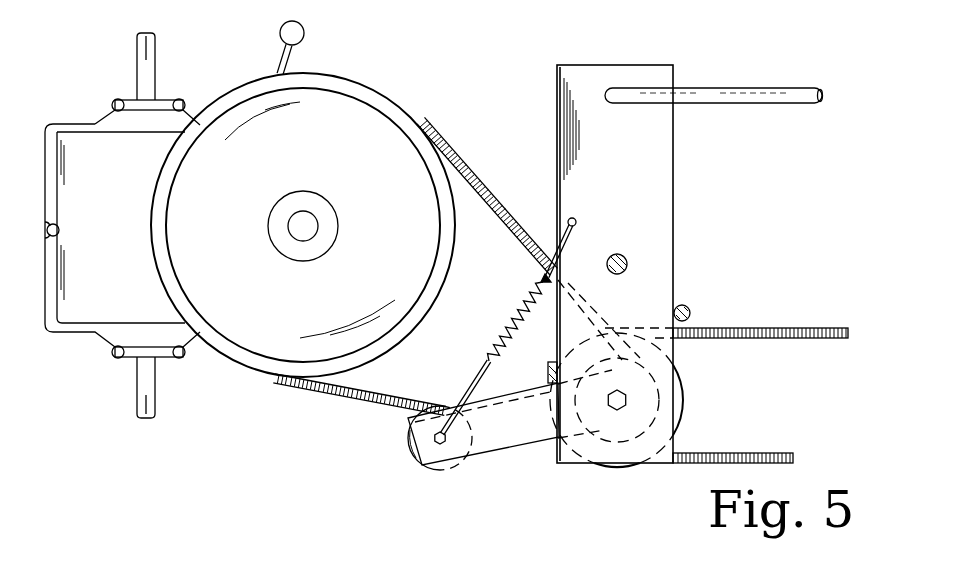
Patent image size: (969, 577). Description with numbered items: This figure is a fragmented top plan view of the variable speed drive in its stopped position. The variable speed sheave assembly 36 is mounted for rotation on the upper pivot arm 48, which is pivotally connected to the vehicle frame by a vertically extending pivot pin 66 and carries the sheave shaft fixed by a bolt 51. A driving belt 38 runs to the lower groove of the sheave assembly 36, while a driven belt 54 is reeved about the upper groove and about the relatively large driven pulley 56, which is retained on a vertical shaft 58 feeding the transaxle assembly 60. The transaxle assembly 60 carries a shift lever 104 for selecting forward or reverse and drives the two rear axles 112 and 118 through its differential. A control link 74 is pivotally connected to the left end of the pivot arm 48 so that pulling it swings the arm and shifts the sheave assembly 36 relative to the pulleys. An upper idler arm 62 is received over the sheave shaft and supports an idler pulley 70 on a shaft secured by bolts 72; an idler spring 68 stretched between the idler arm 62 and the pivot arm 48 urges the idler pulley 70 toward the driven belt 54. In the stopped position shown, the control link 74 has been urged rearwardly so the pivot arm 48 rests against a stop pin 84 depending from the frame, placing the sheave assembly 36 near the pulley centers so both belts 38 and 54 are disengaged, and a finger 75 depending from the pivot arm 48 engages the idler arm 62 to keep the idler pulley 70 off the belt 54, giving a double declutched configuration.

The variable speed sheave assembly 36 is at (706, 392).
The driving belt 38 is at (773, 327).
The upper pivot arm 48 is at (657, 190).
The bolt 51 is at (618, 408).
The driven belt 54 is at (480, 188).
The driven pulley 56 is at (373, 120).
The vertical shaft 58 is at (303, 217).
The transaxle assembly 60 is at (183, 91).
The upper idler arm 62 is at (488, 447).
The pivot pin 66 is at (624, 258).
The idler spring 68 is at (517, 300).
The idler pulley 70 is at (407, 450).
The bolt 72 is at (440, 446).
The control link 74 is at (707, 88).
The finger 75 is at (548, 373).
The stop pin 84 is at (688, 308).
The shift lever 104 is at (304, 31).
The rear axle 112 is at (137, 72).
The rear axle 118 is at (143, 387).